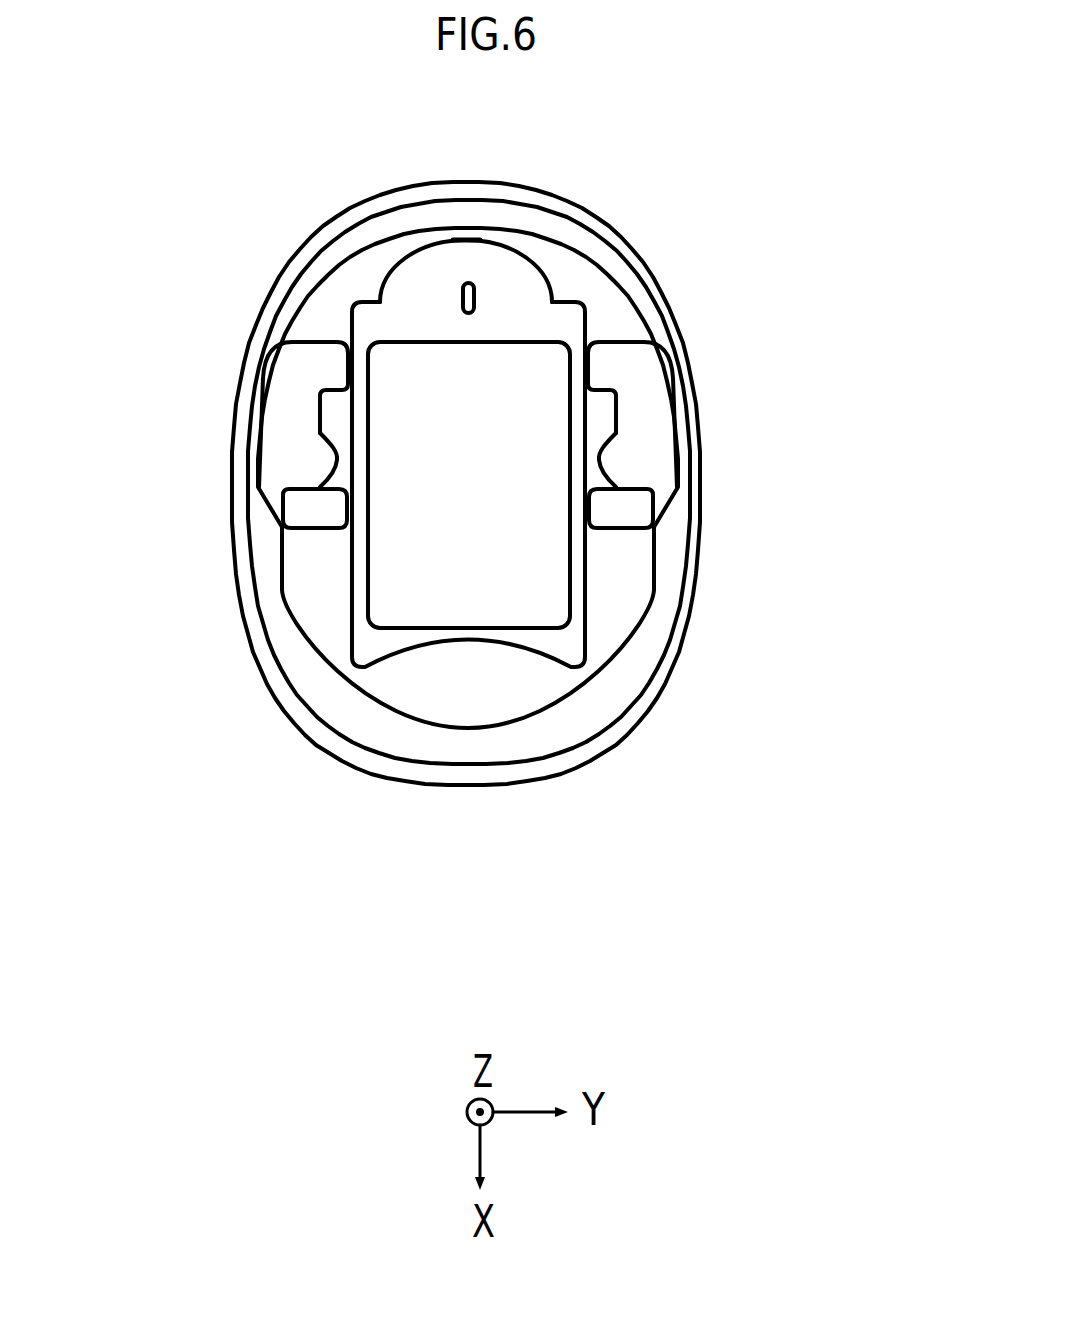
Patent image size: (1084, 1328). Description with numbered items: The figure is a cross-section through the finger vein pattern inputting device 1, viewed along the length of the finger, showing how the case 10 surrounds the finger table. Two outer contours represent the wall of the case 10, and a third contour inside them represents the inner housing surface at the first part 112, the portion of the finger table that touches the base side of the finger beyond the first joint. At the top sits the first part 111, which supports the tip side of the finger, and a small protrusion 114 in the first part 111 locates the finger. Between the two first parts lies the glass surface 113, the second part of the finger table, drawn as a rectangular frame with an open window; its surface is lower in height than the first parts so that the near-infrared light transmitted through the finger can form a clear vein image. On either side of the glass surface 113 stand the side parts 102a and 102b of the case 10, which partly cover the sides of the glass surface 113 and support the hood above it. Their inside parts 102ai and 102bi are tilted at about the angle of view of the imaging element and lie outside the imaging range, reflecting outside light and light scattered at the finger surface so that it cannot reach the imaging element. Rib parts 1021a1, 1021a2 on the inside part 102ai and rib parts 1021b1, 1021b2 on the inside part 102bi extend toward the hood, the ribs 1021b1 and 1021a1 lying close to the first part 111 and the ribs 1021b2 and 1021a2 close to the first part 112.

The finger vein pattern inputting device 1 is at (888, 135).
The case 10 is at (335, 748).
The first part 111 is at (500, 265).
The first part 112 is at (473, 680).
The glass surface 113 is at (470, 492).
The protrusion 114 is at (460, 295).
The side part 102a is at (750, 395).
The inside part 102ai is at (603, 417).
The first hook of first magnet 1021a1 is at (603, 357).
The second hook of first magnet 1021a2 is at (605, 503).
The side part 102b is at (206, 420).
The inside part 102bi is at (283, 496).
The rib part 1021b1 is at (330, 365).
The rib part 1021b2 is at (206, 563).